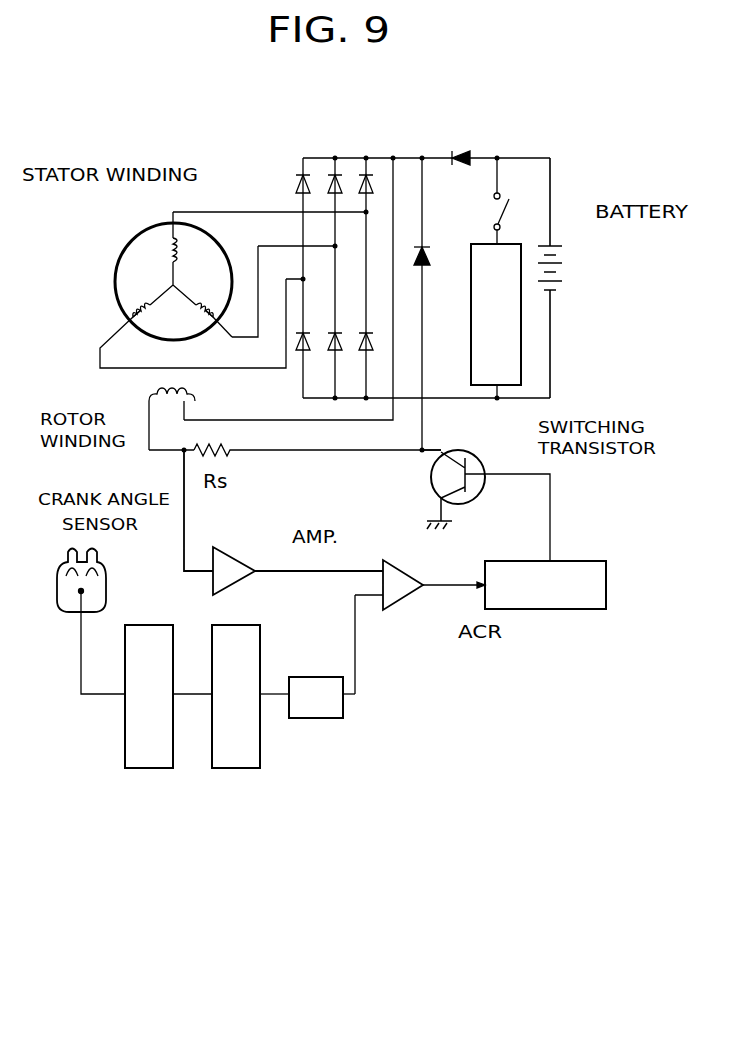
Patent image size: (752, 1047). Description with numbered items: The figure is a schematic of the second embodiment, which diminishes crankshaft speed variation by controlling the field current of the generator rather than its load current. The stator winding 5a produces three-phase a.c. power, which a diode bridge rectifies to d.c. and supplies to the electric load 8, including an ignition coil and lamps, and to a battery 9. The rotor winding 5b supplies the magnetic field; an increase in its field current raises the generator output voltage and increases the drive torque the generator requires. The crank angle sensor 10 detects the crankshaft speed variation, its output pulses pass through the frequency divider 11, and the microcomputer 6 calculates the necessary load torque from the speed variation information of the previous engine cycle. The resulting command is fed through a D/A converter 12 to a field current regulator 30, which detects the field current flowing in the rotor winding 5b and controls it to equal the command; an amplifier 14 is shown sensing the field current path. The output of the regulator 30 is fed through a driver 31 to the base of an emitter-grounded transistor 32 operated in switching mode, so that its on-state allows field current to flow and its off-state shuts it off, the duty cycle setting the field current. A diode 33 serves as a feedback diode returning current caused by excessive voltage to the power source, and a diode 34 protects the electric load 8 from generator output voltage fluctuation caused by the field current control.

The stator winding 5a is at (137, 236).
The rotor winding 5b is at (149, 398).
The microcomputer 6 is at (245, 768).
The electric load 8 is at (477, 243).
The battery 9 is at (557, 245).
The crank angle sensor 10 is at (58, 570).
The frequency divider 11 is at (159, 768).
The D/A converter 12 is at (323, 718).
The amplifier 14 is at (240, 552).
The field current regulator (ACR) 30 is at (410, 598).
The driver 31 is at (507, 560).
The transistor 32 is at (478, 455).
The diode 33 is at (427, 261).
The diode 34 is at (461, 153).